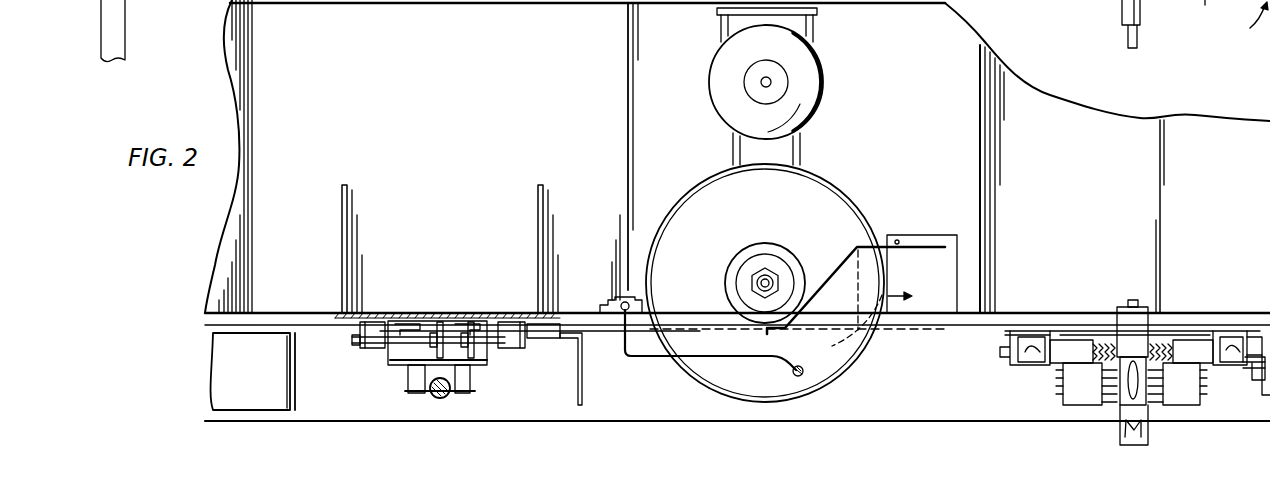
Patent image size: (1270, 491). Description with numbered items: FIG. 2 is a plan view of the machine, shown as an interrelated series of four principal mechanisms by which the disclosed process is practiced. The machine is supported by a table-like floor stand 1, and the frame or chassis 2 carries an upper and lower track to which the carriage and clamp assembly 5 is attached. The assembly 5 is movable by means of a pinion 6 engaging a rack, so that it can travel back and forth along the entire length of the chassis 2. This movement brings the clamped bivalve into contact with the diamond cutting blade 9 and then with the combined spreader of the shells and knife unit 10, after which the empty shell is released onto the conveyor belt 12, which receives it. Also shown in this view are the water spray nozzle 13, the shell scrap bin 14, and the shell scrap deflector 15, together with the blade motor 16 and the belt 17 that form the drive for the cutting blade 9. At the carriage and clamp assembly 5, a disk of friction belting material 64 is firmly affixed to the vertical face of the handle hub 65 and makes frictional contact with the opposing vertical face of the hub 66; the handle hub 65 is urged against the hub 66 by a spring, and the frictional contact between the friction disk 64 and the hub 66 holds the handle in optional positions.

The floor stand 1 is at (1253, 22).
The frame or chassis 2 is at (1208, 16).
The carriage and clamp assembly 5 is at (1143, 316).
The pinion 6 is at (1266, 385).
The diamond cutting blade 9 is at (708, 242).
The combined spreader of the shells and knife unit 10 is at (440, 398).
The conveyor belt 12 is at (250, 383).
The water spray nozzle 13 is at (793, 376).
The shell scrap bin 14 is at (941, 293).
The shell scrap deflector 15 is at (839, 262).
The blade motor 16 is at (810, 80).
The belt 17 is at (801, 150).
The disk of friction belting material 64 is at (1258, 372).
The handle hub 65 is at (1268, 315).
The hub 66 is at (1247, 337).